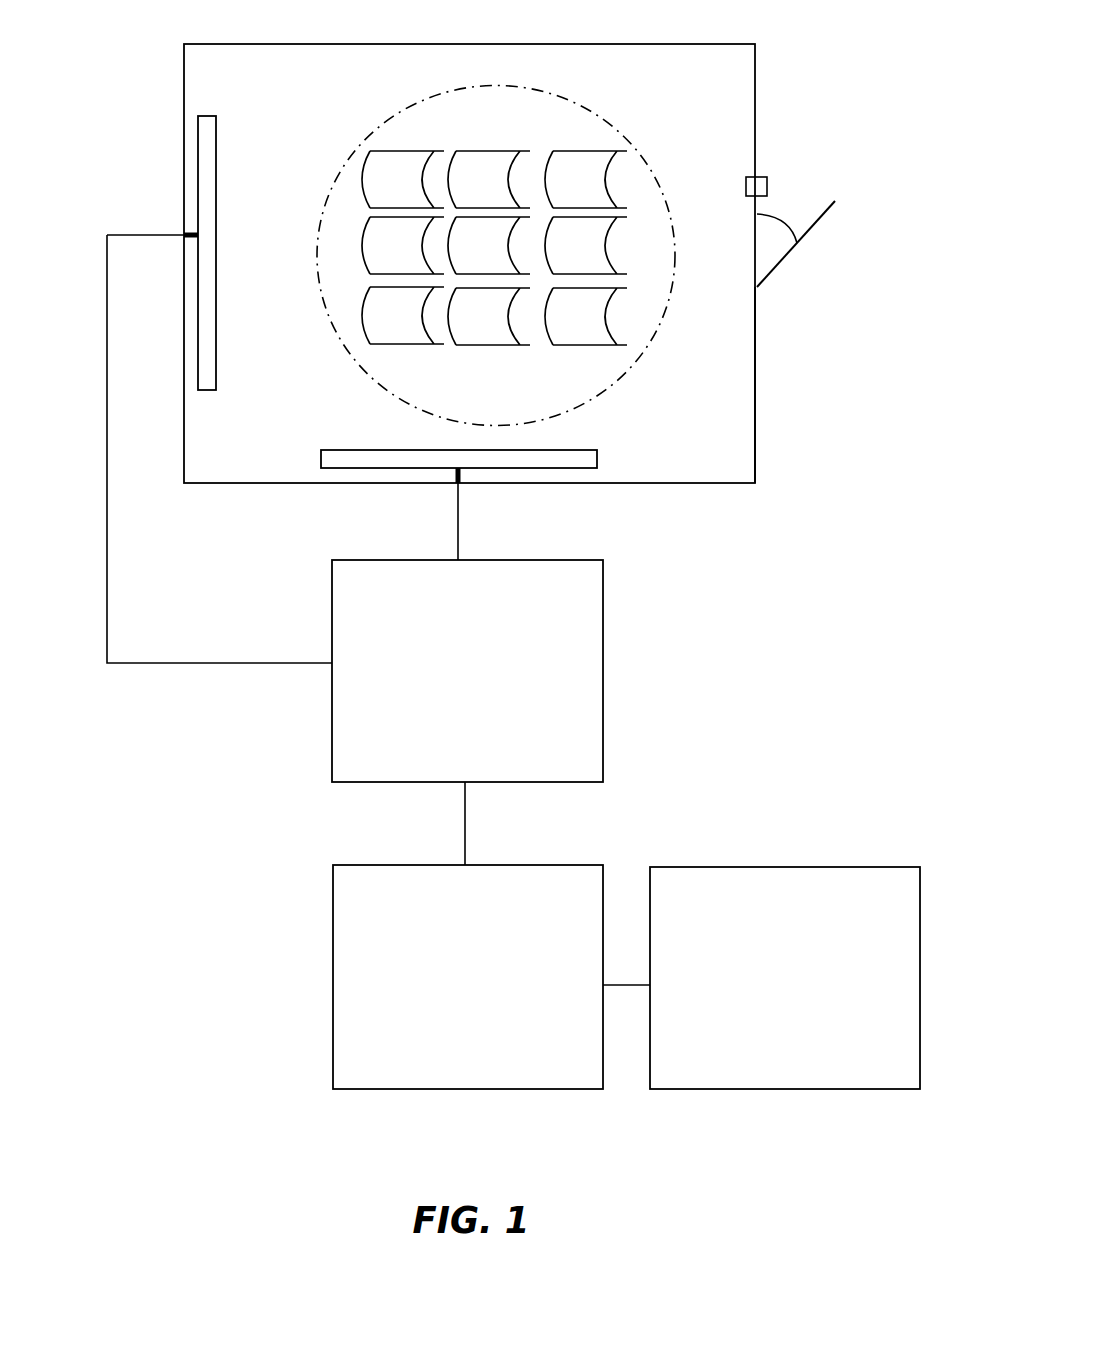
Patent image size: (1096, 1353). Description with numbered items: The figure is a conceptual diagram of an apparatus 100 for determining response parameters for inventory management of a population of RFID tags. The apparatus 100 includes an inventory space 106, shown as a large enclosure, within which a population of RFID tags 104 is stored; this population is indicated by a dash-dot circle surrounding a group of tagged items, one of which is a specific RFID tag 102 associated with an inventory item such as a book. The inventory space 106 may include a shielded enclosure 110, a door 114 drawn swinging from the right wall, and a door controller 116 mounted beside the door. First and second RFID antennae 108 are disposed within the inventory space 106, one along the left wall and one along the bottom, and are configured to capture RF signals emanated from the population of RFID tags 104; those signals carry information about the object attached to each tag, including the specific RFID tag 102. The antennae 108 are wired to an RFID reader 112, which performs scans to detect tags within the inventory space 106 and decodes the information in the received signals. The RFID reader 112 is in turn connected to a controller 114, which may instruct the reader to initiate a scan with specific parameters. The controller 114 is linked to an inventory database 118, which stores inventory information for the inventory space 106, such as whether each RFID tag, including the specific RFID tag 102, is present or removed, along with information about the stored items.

The apparatus 100 is at (895, 75).
The specific RFID tag 102 is at (494, 248).
The population of RFID tags 104 is at (613, 124).
The inventory space 106 is at (233, 78).
The RFID antennae 108 is at (319, 458).
The shielded enclosure 110 is at (760, 360).
The RFID reader 112 is at (451, 668).
The controller 114 is at (798, 243).
The door controller 116 is at (767, 176).
The inventory database 118 is at (768, 975).